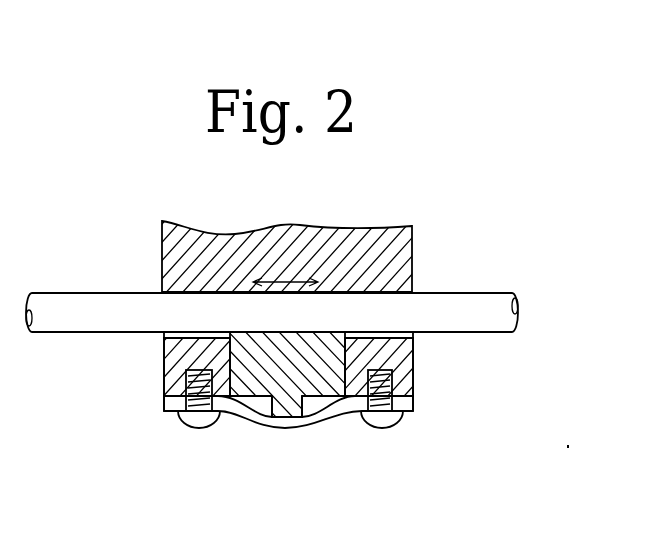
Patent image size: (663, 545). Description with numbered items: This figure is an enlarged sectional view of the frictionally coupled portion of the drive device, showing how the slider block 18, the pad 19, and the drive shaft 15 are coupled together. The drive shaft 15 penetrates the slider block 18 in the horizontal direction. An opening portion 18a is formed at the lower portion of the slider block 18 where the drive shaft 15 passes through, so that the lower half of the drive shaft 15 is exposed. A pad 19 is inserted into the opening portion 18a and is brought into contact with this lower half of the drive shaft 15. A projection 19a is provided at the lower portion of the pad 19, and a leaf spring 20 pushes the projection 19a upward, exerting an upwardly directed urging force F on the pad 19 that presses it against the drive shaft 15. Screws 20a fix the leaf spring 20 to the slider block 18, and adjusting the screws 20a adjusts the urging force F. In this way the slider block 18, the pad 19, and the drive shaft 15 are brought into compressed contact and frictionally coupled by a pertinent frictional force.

The drive shaft 15 is at (65, 333).
The slider block 18 is at (177, 257).
The opening portion 18a is at (345, 400).
The pad 19 is at (315, 398).
The projection 19a is at (272, 416).
The leaf spring 20 is at (250, 417).
The screws 20a is at (198, 422).
The urging force F is at (293, 459).